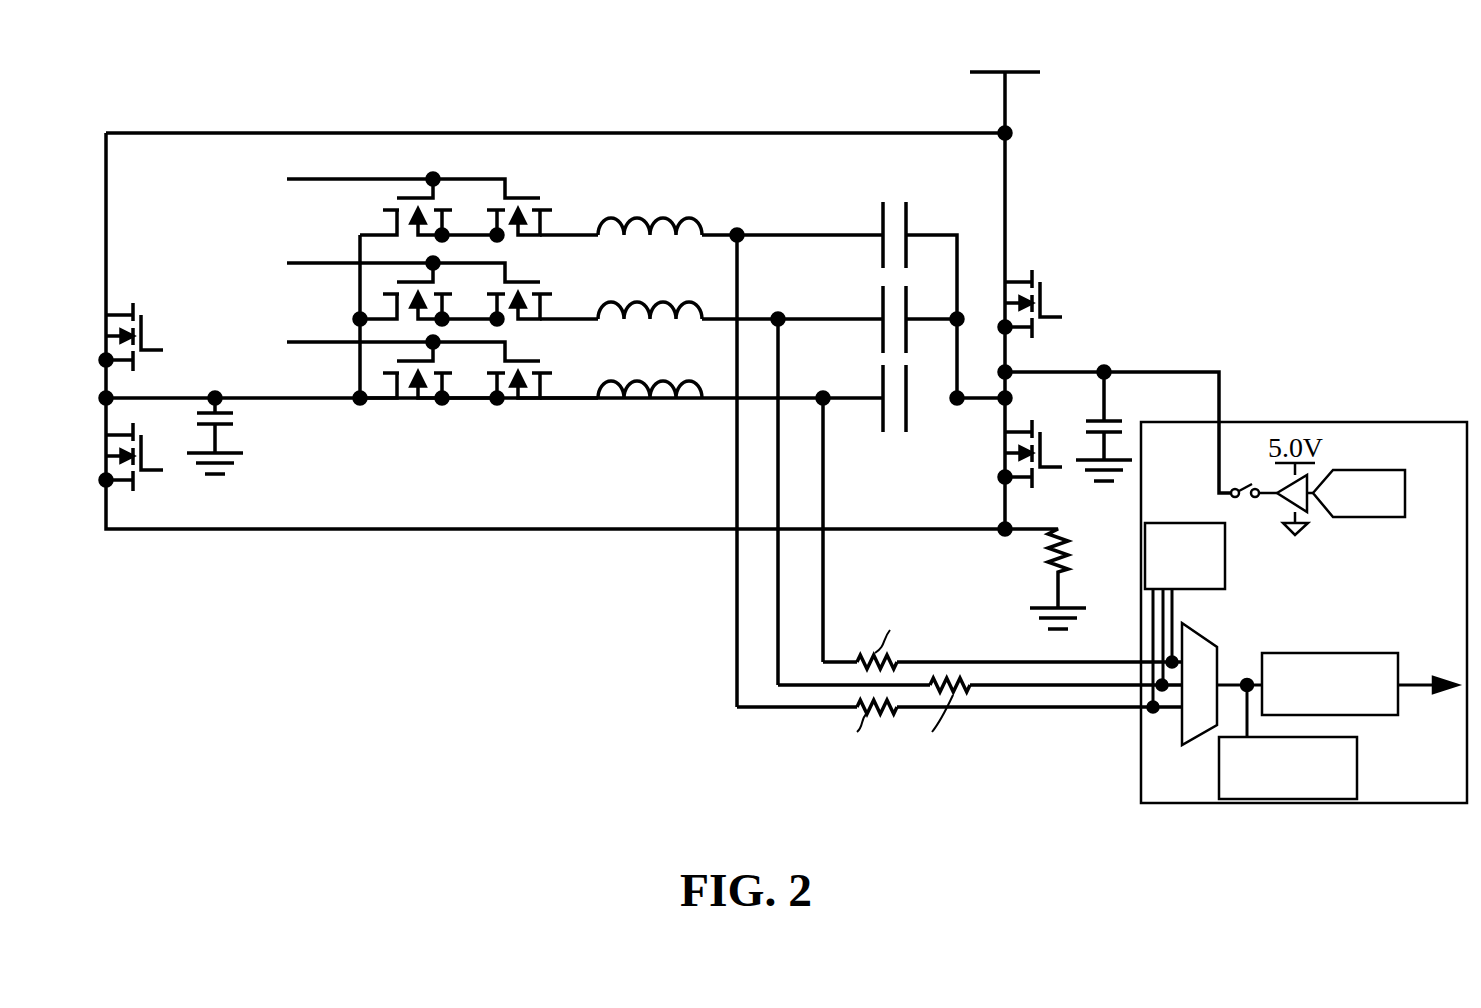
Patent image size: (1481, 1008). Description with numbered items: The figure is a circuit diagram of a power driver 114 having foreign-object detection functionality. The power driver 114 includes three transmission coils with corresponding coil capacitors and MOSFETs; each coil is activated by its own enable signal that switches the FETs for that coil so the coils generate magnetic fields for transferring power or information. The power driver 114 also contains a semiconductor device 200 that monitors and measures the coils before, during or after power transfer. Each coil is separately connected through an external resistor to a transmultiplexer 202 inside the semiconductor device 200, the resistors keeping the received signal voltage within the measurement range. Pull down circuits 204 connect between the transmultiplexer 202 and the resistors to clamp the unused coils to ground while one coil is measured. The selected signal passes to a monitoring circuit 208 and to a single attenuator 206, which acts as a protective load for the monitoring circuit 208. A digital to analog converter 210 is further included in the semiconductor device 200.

The power driver 114 is at (708, 45).
The semiconductor device 200 is at (1333, 422).
The transmultiplexer 202 is at (1198, 735).
The pull down circuits 204 is at (1170, 522).
The attenuator 206 is at (1265, 800).
The monitoring circuit 208 is at (1312, 652).
The digital to analog converter 210 is at (1370, 517).